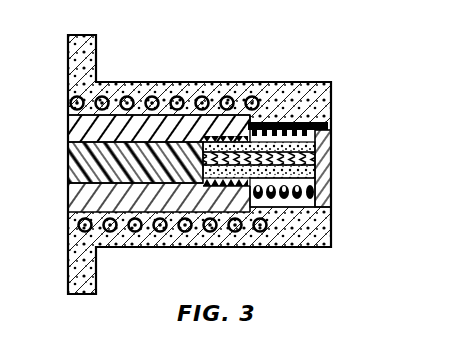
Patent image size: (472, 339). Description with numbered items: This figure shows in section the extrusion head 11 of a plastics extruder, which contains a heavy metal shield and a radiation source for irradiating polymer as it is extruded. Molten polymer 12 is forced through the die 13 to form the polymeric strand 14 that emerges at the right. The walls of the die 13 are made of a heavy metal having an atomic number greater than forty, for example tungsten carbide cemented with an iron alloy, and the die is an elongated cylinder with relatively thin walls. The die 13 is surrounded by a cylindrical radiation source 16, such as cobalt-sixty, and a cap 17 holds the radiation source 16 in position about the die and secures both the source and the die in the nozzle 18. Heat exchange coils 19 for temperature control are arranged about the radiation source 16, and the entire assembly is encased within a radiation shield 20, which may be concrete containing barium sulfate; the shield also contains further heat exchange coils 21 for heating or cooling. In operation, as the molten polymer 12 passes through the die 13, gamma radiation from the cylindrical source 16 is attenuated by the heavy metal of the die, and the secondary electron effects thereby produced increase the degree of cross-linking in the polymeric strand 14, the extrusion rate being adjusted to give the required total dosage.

The extrusion head 11 is at (167, 68).
The molten polymer 12 is at (94, 160).
The die 13 is at (331, 152).
The polymeric strand 14 is at (328, 165).
The cylindrical radiation source 16 is at (331, 136).
The cap 17 is at (331, 178).
The nozzle 18 is at (94, 128).
The heat exchange coils 19 is at (331, 192).
The radiation shield 20 is at (332, 226).
The heat exchange coils 21 is at (78, 226).